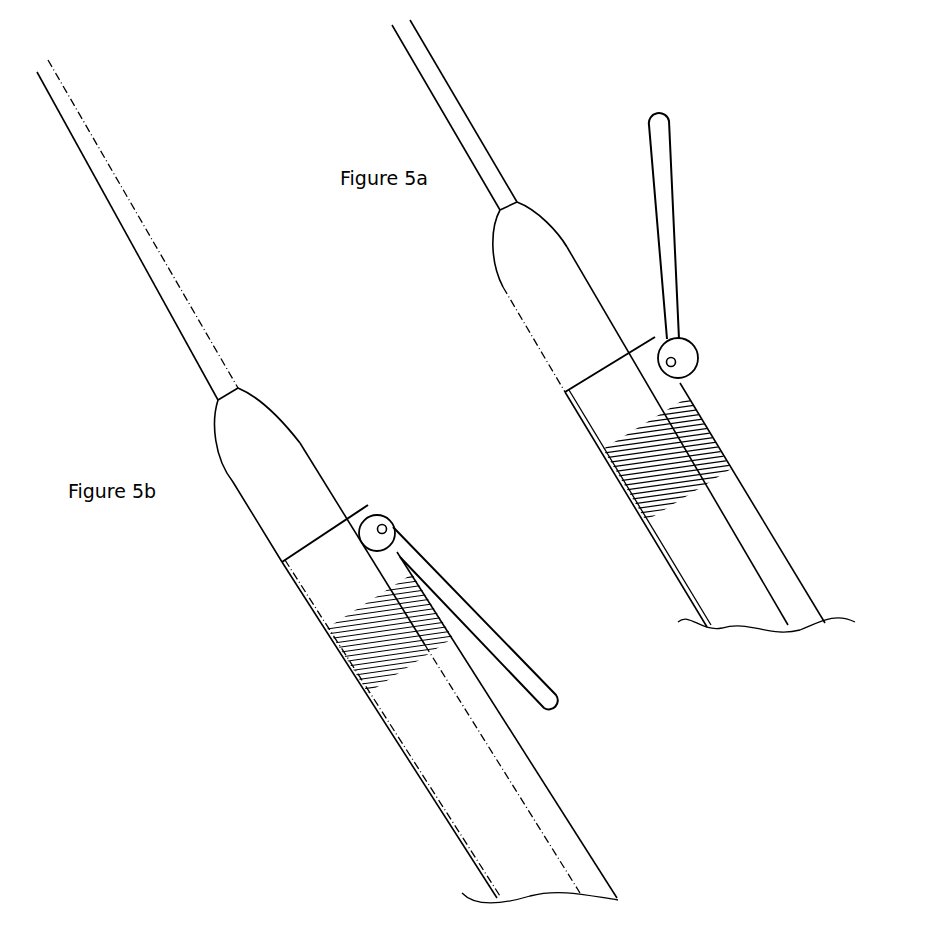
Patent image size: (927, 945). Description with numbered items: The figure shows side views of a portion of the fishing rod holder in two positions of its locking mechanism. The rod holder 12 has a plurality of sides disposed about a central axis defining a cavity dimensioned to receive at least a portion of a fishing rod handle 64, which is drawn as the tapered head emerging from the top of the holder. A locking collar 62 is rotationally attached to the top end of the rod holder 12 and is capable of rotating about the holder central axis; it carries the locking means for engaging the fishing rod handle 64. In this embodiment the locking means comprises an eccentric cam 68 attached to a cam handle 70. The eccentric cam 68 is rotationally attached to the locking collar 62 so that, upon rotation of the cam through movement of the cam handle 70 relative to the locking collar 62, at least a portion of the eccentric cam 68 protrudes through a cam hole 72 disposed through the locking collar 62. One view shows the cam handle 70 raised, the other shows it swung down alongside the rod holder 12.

In FIG. 5A, the rod holder 12 is at (673, 587).
In FIG. 5B, the rod holder 12 is at (407, 768).
In FIG. 5A, the locking collar 62 is at (585, 433).
In FIG. 5B, the locking collar 62 is at (313, 617).
In FIG. 5A, the fishing rod handle 64 is at (502, 287).
In FIG. 5B, the fishing rod handle 64 is at (275, 410).
In FIG. 5A, the eccentric cam 68 is at (658, 342).
In FIG. 5B, the eccentric cam 68 is at (393, 522).
In FIG. 5A, the cam handle 70 is at (663, 133).
In FIG. 5B, the cam handle 70 is at (535, 686).
In FIG. 5A, the cam hole 72 is at (681, 380).
In FIG. 5B, the cam hole 72 is at (373, 507).